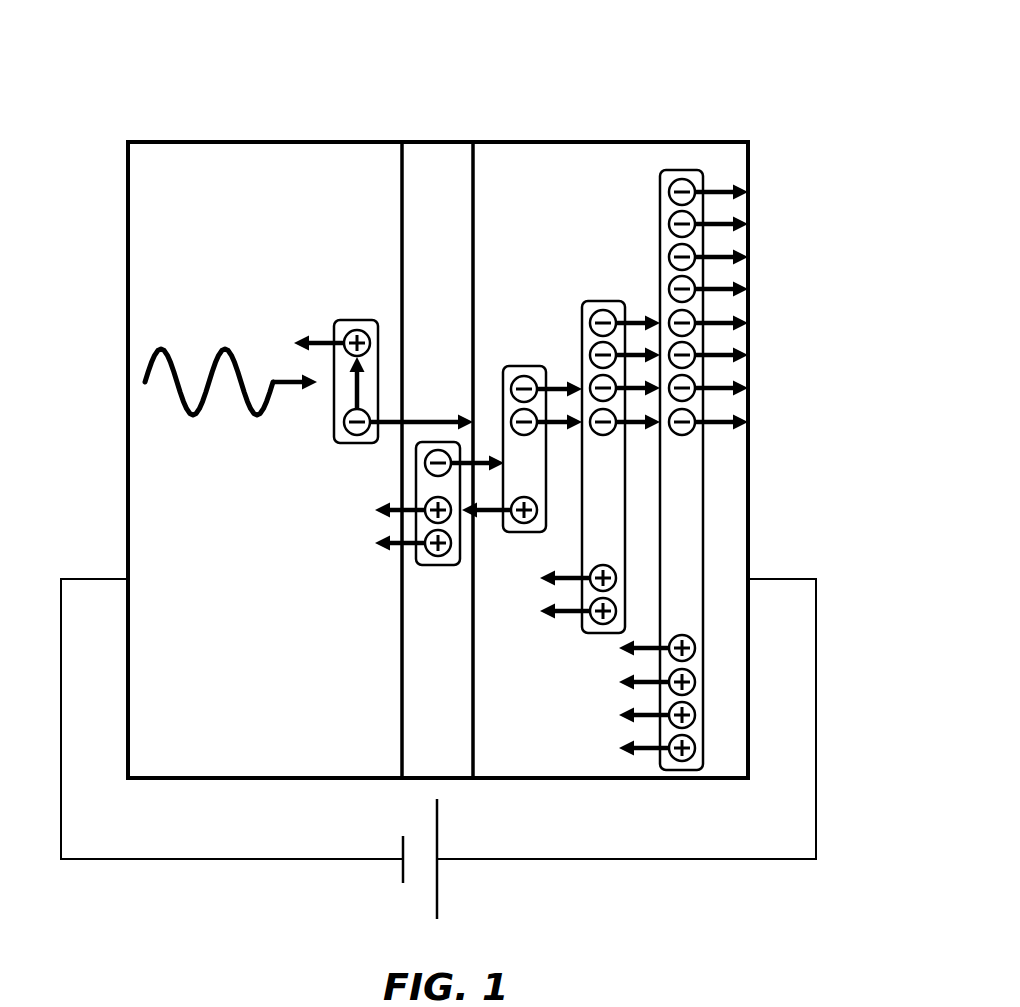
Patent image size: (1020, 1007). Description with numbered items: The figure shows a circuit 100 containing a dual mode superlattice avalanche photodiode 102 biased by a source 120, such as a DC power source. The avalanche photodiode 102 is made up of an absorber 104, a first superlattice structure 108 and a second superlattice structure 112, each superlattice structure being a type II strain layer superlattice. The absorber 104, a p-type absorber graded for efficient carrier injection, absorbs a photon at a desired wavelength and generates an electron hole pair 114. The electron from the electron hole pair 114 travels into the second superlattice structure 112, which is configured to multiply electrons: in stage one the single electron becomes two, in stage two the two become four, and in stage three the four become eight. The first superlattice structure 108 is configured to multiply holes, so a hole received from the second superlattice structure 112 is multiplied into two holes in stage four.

The circuit 100 is at (553, 56).
The avalanche photodiode 102 is at (270, 128).
The absorber 104 is at (186, 763).
The first superlattice structure 108 is at (457, 763).
The second superlattice structure 112 is at (532, 763).
The electron hole pair 114 is at (357, 320).
The source 120 is at (440, 847).